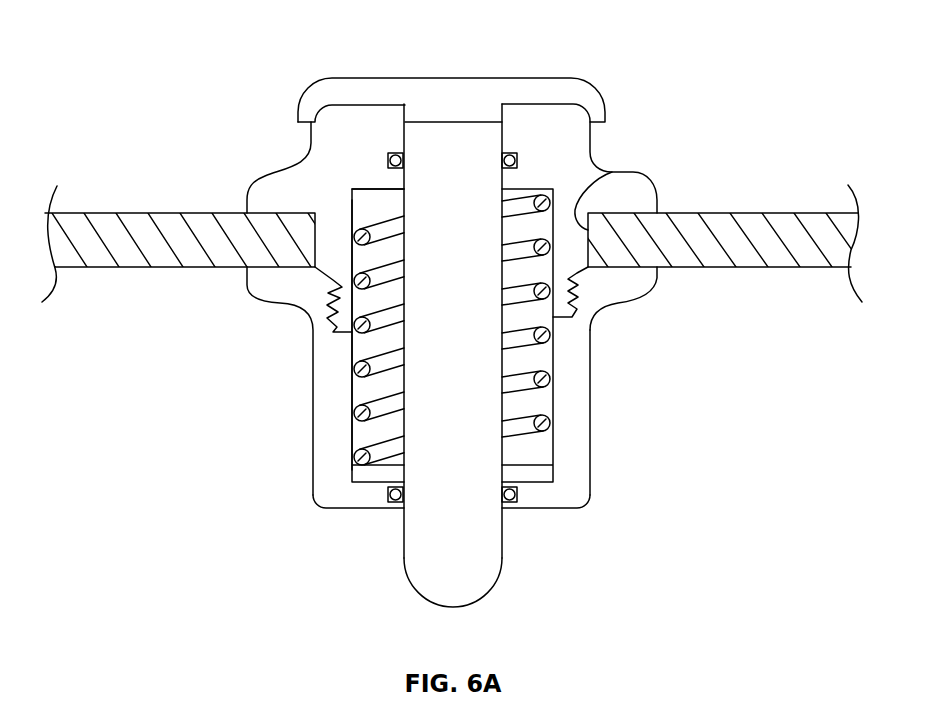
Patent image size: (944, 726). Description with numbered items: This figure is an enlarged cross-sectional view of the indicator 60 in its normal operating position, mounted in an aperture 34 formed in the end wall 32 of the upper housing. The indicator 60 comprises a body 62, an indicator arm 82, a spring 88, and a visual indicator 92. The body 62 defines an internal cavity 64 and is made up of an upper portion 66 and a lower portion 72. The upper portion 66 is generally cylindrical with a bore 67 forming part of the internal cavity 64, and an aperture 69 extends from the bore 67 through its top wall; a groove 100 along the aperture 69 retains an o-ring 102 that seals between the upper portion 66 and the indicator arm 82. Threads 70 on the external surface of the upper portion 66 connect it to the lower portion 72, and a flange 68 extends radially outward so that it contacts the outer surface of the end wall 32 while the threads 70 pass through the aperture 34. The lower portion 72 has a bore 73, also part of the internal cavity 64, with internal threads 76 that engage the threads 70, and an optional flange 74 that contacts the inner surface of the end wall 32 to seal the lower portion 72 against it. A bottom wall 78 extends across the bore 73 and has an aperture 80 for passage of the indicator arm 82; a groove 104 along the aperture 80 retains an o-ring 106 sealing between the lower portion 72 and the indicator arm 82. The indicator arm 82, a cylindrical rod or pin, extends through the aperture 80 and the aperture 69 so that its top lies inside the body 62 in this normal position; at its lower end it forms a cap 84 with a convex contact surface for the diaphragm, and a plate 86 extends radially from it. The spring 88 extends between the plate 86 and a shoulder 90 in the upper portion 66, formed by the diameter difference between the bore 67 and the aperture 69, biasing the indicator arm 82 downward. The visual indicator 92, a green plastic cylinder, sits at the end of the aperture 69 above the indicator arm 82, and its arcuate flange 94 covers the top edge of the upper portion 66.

The end wall 32 is at (97, 220).
The aperture 34 is at (597, 167).
The indicator 60 is at (222, 98).
The body 62 is at (604, 325).
The internal cavity 64 is at (378, 335).
The upper portion 66 is at (310, 143).
The bore 67 is at (353, 210).
The flange 68 is at (257, 202).
The aperture 69 is at (406, 138).
The threads 70 is at (327, 283).
The lower portion 72 is at (588, 408).
The bore 73 is at (357, 387).
The flange 74 is at (628, 277).
The threads 76 is at (573, 293).
The bottom wall 78 is at (545, 498).
The aperture 80 is at (403, 503).
The indicator arm 82 is at (450, 433).
The cap 84 is at (473, 593).
The plate 86 is at (542, 475).
The spring 88 is at (380, 362).
The shoulder 90 is at (365, 188).
The visual indicator 92 is at (410, 88).
The arcuate flange 94 is at (312, 110).
The groove 100 is at (388, 153).
The o-ring 102 is at (398, 155).
The groove 104 is at (387, 497).
The o-ring 106 is at (393, 502).